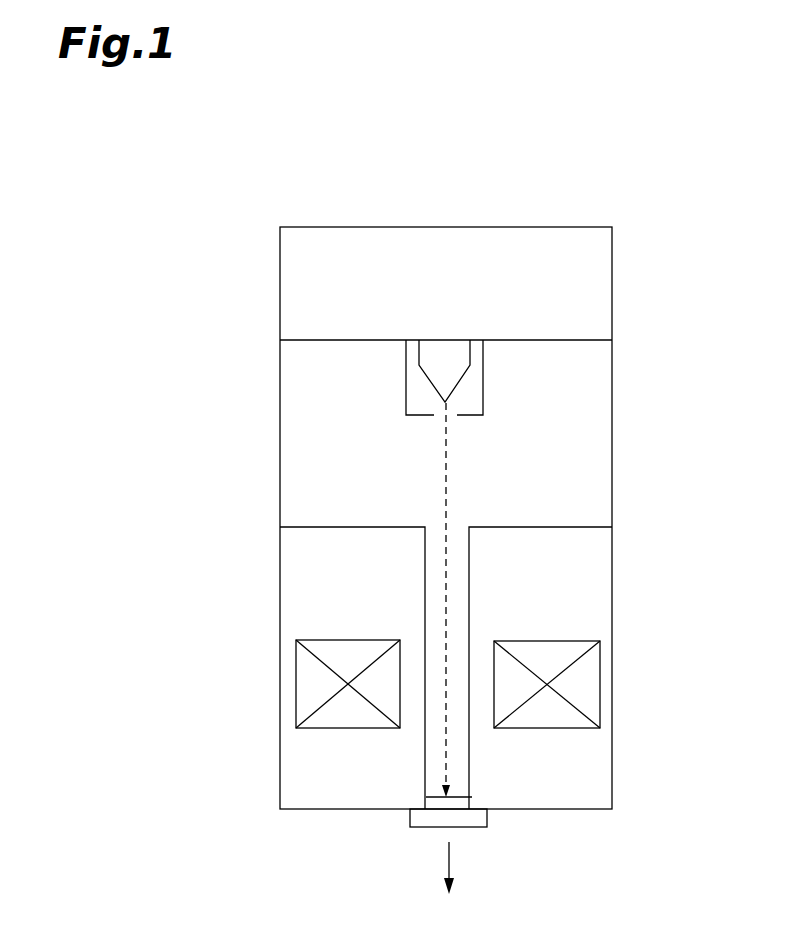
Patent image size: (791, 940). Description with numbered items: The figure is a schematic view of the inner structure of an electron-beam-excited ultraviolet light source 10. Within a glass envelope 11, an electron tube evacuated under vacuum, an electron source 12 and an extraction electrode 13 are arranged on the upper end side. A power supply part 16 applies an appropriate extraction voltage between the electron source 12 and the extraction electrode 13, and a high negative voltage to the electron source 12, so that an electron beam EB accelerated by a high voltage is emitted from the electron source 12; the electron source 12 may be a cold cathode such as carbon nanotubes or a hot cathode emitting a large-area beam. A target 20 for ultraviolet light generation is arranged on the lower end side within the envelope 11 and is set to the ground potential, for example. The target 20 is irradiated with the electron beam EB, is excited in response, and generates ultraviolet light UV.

The electron-beam-excited ultraviolet light source 10 is at (658, 148).
The glass envelope 11 is at (612, 470).
The electron source 12 is at (457, 384).
The extraction electrode 13 is at (406, 376).
The power supply part 16 is at (612, 305).
The target 20 is at (472, 822).
The electron beam EB is at (448, 485).
The ultraviolet light UV is at (445, 858).